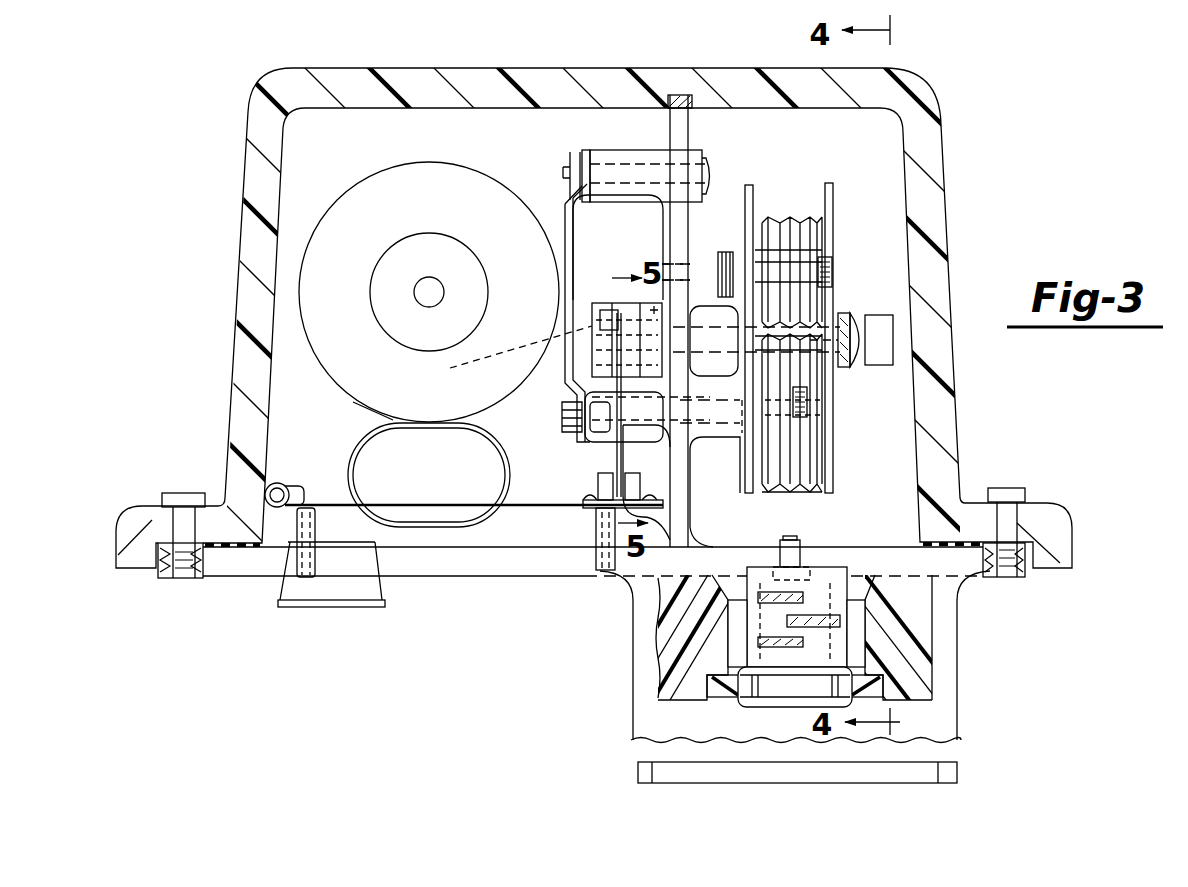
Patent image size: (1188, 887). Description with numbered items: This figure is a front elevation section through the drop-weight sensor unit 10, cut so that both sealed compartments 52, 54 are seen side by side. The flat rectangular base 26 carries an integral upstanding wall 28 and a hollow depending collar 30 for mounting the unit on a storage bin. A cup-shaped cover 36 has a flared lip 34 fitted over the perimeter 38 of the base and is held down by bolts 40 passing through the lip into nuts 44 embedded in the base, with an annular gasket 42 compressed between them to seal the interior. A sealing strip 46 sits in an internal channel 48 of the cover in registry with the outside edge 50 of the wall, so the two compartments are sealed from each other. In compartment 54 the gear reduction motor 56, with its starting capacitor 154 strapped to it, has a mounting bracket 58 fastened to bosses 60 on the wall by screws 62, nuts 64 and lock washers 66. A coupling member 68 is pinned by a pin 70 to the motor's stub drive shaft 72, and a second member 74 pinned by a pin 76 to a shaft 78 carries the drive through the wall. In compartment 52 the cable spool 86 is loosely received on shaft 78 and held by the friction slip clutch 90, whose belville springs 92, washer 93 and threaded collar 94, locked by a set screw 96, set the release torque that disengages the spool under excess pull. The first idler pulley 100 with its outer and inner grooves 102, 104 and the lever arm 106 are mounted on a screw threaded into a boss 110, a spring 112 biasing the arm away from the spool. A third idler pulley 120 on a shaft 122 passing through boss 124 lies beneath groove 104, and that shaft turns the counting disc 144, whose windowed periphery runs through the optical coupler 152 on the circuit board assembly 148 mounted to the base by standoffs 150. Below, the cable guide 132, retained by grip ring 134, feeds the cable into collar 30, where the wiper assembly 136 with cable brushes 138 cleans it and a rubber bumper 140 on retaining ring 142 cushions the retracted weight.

The sensor unit 10 is at (1082, 222).
The base 26 is at (440, 556).
The wall 28 is at (690, 512).
The collar 30 is at (958, 718).
The lip 34 is at (134, 520).
The cover 36 is at (942, 464).
The perimeter 38 is at (155, 578).
The bolts 40 is at (188, 494).
The gasket 42 is at (232, 550).
The nuts 44 is at (190, 578).
The sealing strip 46 is at (690, 95).
The internal channel 48 is at (692, 100).
The outside edge 50 is at (670, 122).
The compartment 52 is at (897, 125).
The compartment 54 is at (483, 105).
The gear reduction motor 56 is at (470, 140).
The mounting bracket 58 is at (562, 290).
The bosses 60 is at (560, 128).
The screws 62 is at (708, 200).
The nuts 64 is at (570, 160).
The lock washers 66 is at (575, 150).
The coupling member 68 is at (450, 291).
The pin 70 is at (598, 330).
The stub drive shaft 72 is at (545, 340).
The second member 74 is at (620, 300).
The pin 76 is at (478, 343).
The shaft 78 is at (812, 348).
The cable spool 86 is at (767, 217).
The friction slip clutch 90 is at (885, 232).
The belville springs 92 is at (840, 312).
The washer 93 is at (852, 312).
The collar 94 is at (880, 313).
The set screw 96 is at (907, 337).
The first idler pulley 100 is at (795, 215).
The outer pulley groove 102 is at (895, 340).
The inner pulley groove 104 is at (798, 212).
The lever arm 106 is at (737, 237).
The boss 110 is at (593, 303).
The spring 112 is at (700, 230).
The third idler pulley 120 is at (770, 495).
The shaft 122 is at (810, 410).
The boss 124 is at (712, 437).
The cable guide 132 is at (635, 617).
The grip ring 134 is at (800, 546).
The wiper assembly 136 is at (862, 648).
The cable brushes 138 is at (868, 592).
The rubber bumper 140 is at (652, 770).
The retaining ring 142 is at (745, 703).
The counting disc 144 is at (619, 458).
The electronic circuit board assembly 148 is at (515, 495).
The standoffs 150 is at (318, 556).
The optical coupler 152 is at (597, 483).
The starting capacitor 154 is at (357, 466).